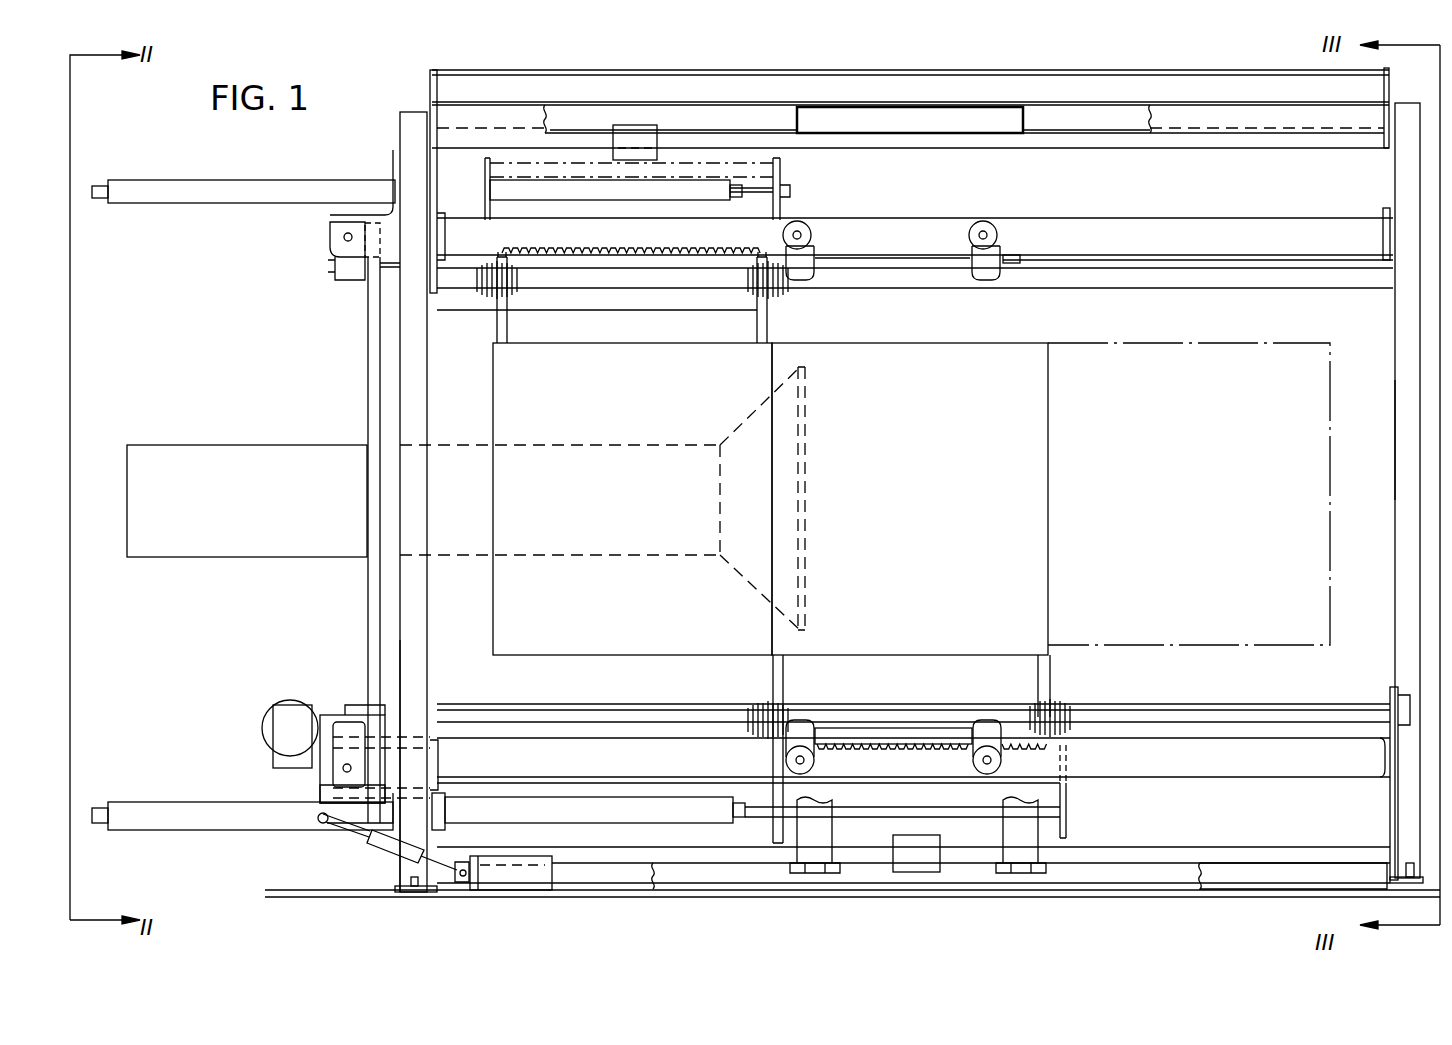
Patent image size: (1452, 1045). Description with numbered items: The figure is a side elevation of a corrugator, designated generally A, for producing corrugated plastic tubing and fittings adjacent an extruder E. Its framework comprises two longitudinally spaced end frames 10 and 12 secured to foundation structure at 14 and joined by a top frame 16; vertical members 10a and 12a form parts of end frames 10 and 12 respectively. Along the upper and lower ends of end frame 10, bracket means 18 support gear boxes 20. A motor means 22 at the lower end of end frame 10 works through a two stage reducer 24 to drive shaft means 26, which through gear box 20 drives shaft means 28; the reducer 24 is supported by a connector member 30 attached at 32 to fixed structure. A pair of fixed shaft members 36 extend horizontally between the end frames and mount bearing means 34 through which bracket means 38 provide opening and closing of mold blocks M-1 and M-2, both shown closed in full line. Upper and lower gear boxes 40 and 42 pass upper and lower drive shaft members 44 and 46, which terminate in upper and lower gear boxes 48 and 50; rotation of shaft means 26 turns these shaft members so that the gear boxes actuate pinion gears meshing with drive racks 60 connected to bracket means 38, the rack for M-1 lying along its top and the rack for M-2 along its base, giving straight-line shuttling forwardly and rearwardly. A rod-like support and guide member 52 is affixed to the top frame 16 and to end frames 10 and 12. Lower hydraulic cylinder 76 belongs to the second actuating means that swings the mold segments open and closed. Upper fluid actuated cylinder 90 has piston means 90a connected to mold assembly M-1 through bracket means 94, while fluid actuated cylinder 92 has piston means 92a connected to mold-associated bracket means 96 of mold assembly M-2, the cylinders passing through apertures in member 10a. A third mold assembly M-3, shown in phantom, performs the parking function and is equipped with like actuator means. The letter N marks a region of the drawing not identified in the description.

The end frame 10 is at (428, 402).
The vertical member 10a is at (428, 656).
The end frame 12 is at (1424, 270).
The vertical member 12a is at (1395, 440).
The foundation structure 14 is at (405, 890).
The top frame 16 is at (958, 72).
The bracket means 18 is at (328, 217).
The gear box 20 is at (335, 237).
The motor means 22 is at (262, 723).
The two stage reducer 24 is at (270, 770).
The shaft means 26 is at (800, 235).
The shaft means 28 is at (368, 415).
The connector member 30 is at (380, 840).
The attachment to fixed structure 32 is at (496, 880).
The bearing means 34 is at (480, 298).
The fixed shaft member 36 is at (1068, 288).
The bracket means 38 is at (496, 318).
The upper gear box 40 is at (352, 280).
The lower gear box 42 is at (352, 712).
The upper drive shaft member 44 is at (888, 258).
The lower drive shaft member 46 is at (645, 740).
The upper gear box 48 is at (818, 240).
The lower gear box 50 is at (839, 752).
The rod-like support and guide member 52 is at (1120, 130).
The drive rack 60 is at (598, 248).
The lower hydraulic cylinder 76 is at (810, 837).
The upper fluid actuated cylinder 90 is at (208, 180).
The piston means 90a is at (765, 191).
The fluid actuated cylinder 92 is at (140, 800).
The piston means 92a is at (879, 808).
The bracket means 94 is at (780, 186).
The mold-associated bracket means 96 is at (1066, 790).
The extruder E is at (241, 443).
The nozzle N is at (806, 487).
The corrugating apparatus A is at (634, 906).
The mold block M-1 is at (632, 499).
The mold block M-2 is at (910, 499).
The third mold assembly M-3 is at (1189, 494).